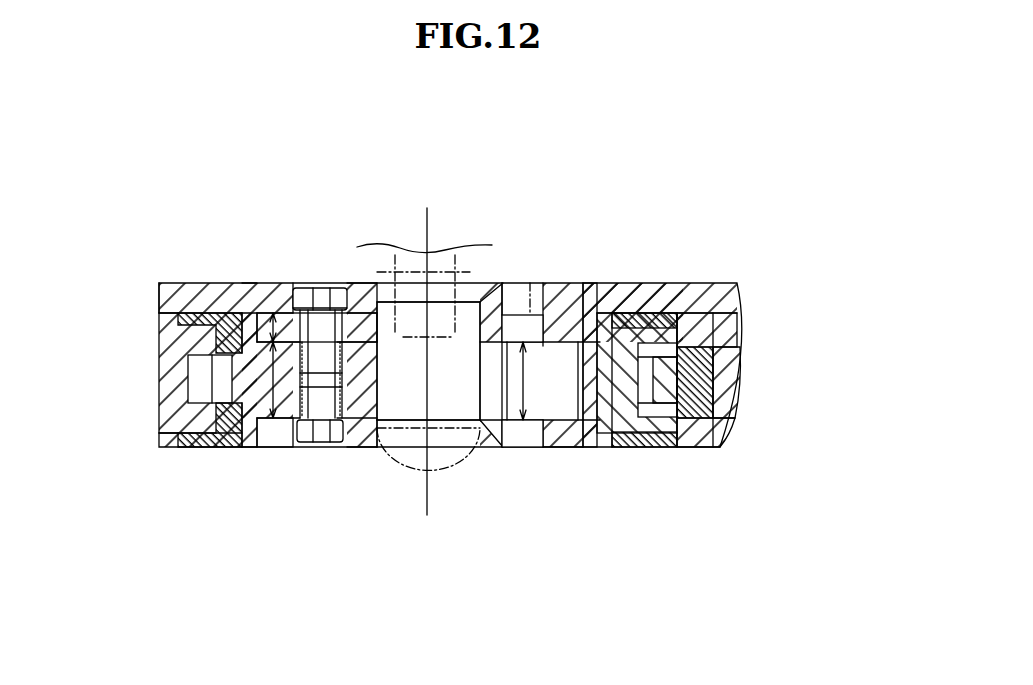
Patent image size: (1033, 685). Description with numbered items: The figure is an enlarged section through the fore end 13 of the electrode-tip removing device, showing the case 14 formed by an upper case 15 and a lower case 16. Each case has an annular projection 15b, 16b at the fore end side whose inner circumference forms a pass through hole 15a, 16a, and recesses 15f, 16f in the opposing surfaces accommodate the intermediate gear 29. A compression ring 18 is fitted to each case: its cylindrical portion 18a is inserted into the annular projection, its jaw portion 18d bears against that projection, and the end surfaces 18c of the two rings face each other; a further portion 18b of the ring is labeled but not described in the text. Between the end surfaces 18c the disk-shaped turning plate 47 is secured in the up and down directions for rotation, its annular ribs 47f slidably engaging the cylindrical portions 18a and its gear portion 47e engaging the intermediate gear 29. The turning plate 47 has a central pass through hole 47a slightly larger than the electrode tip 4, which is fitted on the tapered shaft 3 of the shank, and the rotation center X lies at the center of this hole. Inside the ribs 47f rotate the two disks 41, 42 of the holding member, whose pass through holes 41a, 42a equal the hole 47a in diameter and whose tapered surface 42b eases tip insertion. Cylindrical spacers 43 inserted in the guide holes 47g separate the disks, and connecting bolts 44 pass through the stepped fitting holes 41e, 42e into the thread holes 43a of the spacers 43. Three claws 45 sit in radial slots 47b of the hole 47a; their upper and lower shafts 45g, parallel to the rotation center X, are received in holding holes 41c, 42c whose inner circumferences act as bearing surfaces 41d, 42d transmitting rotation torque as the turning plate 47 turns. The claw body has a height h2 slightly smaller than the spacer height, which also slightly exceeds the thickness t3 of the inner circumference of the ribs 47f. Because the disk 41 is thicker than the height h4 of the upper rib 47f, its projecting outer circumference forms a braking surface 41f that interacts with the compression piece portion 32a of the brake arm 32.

The tapered shaft 3 is at (440, 255).
The electrode tip 4 is at (415, 447).
The fore end 13 is at (721, 252).
The case 14 is at (822, 318).
The upper case 15 is at (705, 320).
The pass through hole 15a is at (190, 358).
The annular projection 15b is at (163, 317).
The recess 15f is at (705, 310).
The lower case 16 is at (720, 442).
The pass through hole 16a is at (165, 385).
The annular projection 16b is at (173, 447).
The recess 16f is at (678, 447).
The compression ring 18 is at (765, 167).
The cylindrical portion 18a is at (621, 287).
The bearing outer race 18b is at (663, 287).
The end surface 18c is at (660, 376).
The jaw portion 18d is at (663, 447).
The intermediate gear 29 is at (723, 450).
The brake arm 32 is at (717, 285).
The compression piece portion 32a is at (172, 283).
The disk 41 is at (565, 287).
The pass through hole 41a is at (385, 287).
The holding hole 41c is at (517, 287).
The bearing surface 41d is at (530, 287).
The fitting hole 41e is at (298, 283).
The braking surface 41f is at (247, 283).
The disk 42 is at (582, 447).
The pass through hole 42a is at (385, 447).
The tapered surface 42b is at (367, 283).
The holding hole 42c is at (543, 447).
The bearing surface 42d is at (522, 447).
The fitting hole 42e is at (300, 447).
The spacer 43 is at (350, 447).
The thread hole 43a is at (445, 360).
The connecting bolt 44 is at (320, 283).
The claw 45 is at (560, 447).
The shaft 45g is at (547, 287).
The turning plate 47 is at (613, 287).
The pass through hole 47a is at (478, 287).
The slot 47b is at (580, 287).
The gear portion 47e is at (210, 378).
The annular rib 47f is at (237, 283).
The guide hole 47g is at (347, 283).
The height h2 is at (538, 381).
The height h4 is at (272, 283).
The thickness t3 is at (250, 447).
The center of rotation X is at (425, 344).